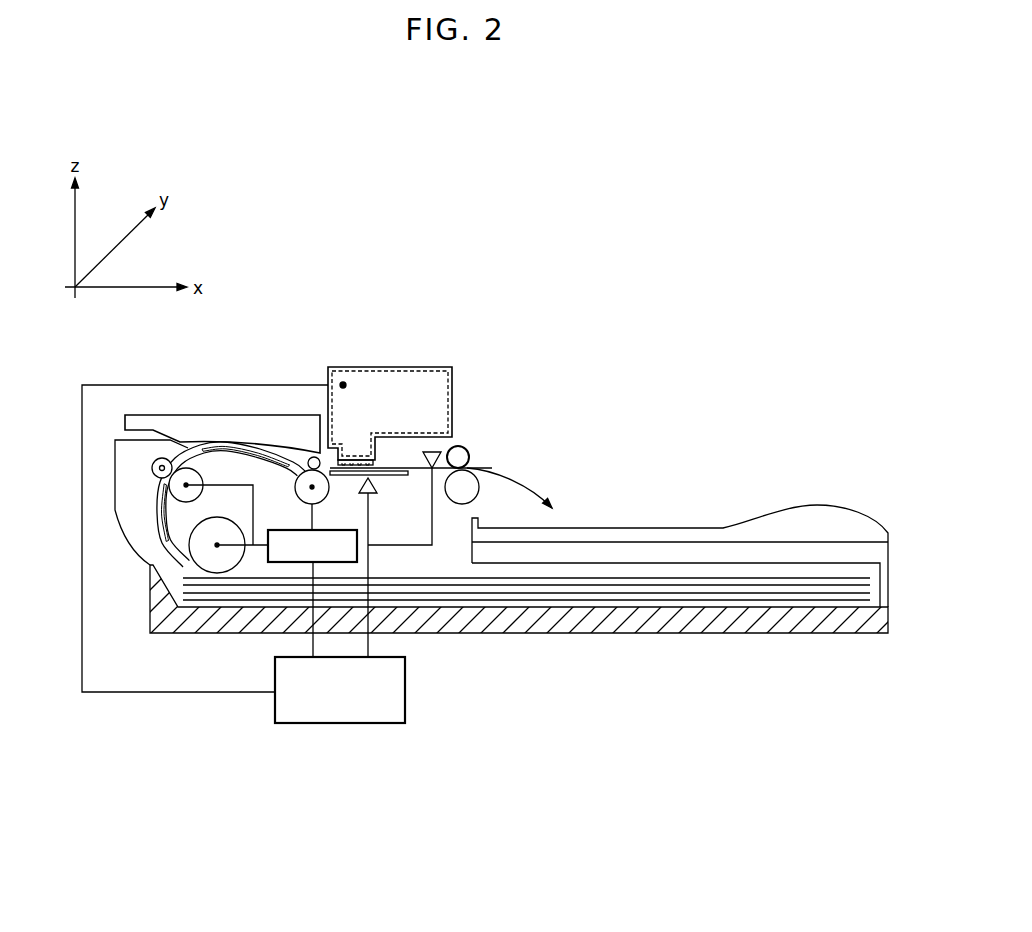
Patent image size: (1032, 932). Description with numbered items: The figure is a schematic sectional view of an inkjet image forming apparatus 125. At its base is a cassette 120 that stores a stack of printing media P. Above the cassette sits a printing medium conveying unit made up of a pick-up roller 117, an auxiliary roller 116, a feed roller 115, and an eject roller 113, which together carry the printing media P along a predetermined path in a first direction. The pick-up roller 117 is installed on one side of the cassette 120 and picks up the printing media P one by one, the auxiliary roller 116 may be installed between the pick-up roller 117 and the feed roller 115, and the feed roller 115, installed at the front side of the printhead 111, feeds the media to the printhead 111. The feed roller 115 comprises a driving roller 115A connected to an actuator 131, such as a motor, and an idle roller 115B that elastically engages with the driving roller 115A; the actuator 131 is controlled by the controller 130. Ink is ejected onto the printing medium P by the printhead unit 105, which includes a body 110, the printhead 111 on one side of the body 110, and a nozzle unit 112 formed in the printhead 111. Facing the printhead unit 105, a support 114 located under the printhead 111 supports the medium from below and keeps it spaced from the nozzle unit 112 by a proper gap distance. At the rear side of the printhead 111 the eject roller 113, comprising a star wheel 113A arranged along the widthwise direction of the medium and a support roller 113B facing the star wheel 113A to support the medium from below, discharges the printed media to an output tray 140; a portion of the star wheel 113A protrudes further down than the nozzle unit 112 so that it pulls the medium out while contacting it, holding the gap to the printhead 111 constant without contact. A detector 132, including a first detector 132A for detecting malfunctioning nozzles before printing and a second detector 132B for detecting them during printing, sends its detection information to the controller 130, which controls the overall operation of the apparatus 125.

The printhead unit 105 is at (457, 363).
The body 110 is at (452, 390).
The printhead 111 is at (343, 384).
The nozzle unit 112 is at (385, 465).
The eject roller 113 is at (492, 437).
The star wheel 113A is at (469, 457).
The support roller 113B is at (479, 488).
The support 114 is at (313, 457).
The feed roller 115 is at (272, 478).
The driving roller 115A is at (262, 448).
The idle roller 115B is at (297, 462).
The auxiliary roller 116 is at (153, 483).
The pick-up roller 117 is at (182, 563).
The cassette 120 is at (662, 632).
The inkjet image forming apparatus 125 is at (667, 285).
The controller 130 is at (345, 723).
The actuator 131 is at (278, 562).
The detector 132 is at (422, 698).
The first detector 132A is at (368, 493).
The second detector 132B is at (433, 470).
The output tray 140 is at (690, 533).
The printing medium P is at (607, 603).